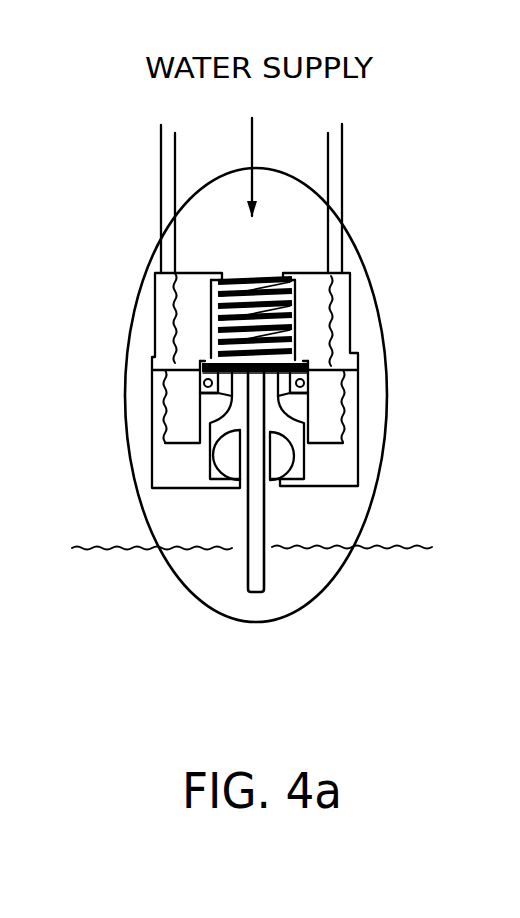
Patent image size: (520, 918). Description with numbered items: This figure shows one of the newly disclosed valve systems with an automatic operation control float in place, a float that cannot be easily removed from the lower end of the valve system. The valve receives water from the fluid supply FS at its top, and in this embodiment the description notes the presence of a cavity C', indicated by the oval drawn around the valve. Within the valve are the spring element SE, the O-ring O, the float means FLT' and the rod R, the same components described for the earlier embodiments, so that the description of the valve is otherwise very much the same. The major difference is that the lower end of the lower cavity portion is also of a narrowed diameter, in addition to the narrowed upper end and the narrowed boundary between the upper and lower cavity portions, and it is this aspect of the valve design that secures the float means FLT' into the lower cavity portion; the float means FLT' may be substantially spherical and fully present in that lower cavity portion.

The fluid supply FS is at (143, 153).
The cavity C' is at (314, 380).
The spring element SE is at (302, 307).
The O-ring O is at (197, 380).
The float means FLT' is at (166, 478).
The rod R is at (245, 570).